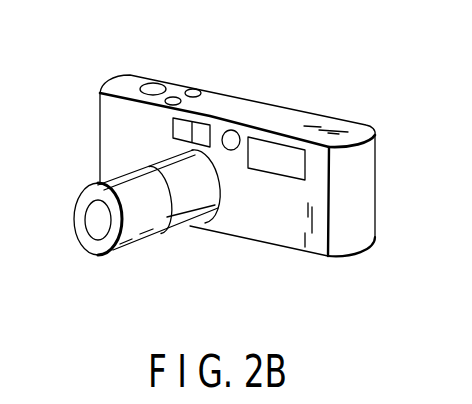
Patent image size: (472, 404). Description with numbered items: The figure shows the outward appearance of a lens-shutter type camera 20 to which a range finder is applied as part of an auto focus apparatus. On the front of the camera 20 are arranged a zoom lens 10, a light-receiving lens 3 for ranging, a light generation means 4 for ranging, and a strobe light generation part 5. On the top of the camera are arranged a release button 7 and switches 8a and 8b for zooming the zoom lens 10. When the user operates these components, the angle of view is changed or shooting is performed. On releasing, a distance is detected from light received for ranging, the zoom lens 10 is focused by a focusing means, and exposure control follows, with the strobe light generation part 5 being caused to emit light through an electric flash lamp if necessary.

The light-receiving lens 3 is at (200, 133).
The light generation means 4 is at (236, 150).
The strobe light generation part 5 is at (280, 162).
The release button 7 is at (157, 84).
The switch 8a is at (173, 98).
The switch 8b is at (192, 91).
The zoom lens 10 is at (95, 222).
The camera 20 is at (338, 118).